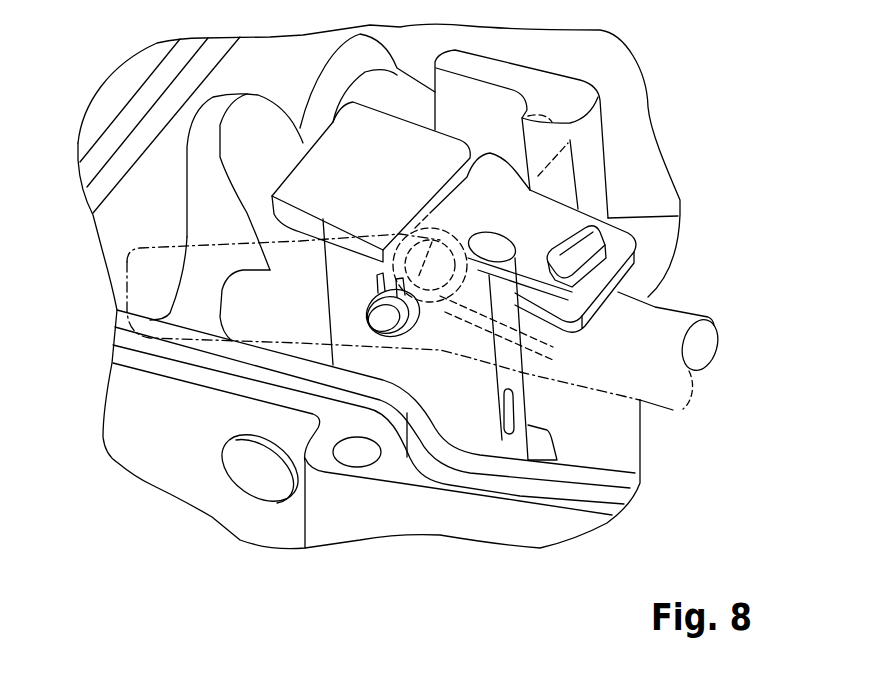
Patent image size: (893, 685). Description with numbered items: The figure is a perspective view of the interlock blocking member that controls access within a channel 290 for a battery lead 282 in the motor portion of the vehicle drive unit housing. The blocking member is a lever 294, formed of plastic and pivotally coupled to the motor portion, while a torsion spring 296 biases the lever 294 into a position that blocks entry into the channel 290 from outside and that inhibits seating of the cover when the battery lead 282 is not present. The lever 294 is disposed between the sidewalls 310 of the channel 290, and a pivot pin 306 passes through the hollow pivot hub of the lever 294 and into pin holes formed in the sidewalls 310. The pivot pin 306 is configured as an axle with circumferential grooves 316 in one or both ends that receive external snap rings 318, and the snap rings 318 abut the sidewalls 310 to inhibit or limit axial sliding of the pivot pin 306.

The battery lead 282 is at (678, 315).
The channel 290 is at (551, 392).
The lever 294 is at (562, 222).
The torsion spring 296 is at (540, 343).
The pivot pin 306 is at (430, 216).
The sidewalls 310 is at (347, 212).
The circumferential grooves 316 is at (367, 303).
The snap rings 318 is at (412, 298).